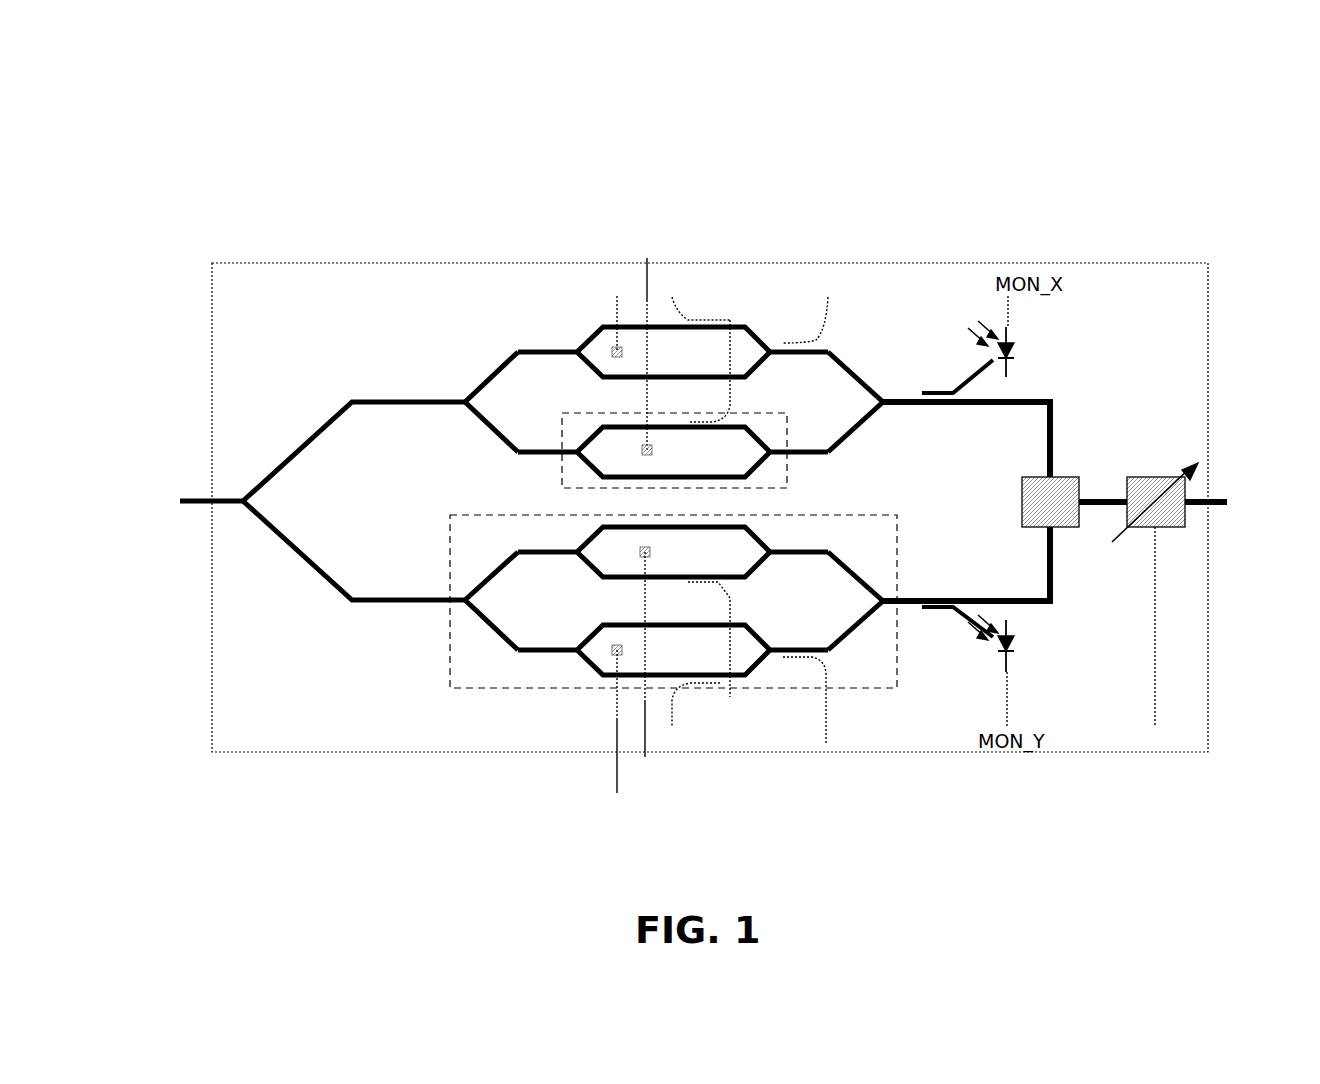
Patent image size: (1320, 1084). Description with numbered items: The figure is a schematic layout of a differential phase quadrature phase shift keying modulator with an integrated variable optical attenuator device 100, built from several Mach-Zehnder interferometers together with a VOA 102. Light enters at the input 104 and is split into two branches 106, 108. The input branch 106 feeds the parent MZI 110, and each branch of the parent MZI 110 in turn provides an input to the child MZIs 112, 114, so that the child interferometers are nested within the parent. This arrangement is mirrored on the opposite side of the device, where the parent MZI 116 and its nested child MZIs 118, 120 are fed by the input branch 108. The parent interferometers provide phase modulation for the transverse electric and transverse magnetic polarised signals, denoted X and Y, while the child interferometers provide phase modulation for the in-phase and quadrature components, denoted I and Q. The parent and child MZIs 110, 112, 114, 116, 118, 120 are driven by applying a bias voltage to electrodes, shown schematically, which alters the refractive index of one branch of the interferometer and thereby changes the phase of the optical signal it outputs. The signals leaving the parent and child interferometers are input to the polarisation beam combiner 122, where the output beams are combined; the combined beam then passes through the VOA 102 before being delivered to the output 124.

The differential phase quadrature phase shift keying modulator with integrated varia 100 is at (248, 185).
The VOA 102 is at (1160, 483).
The input 104 is at (183, 498).
The input branch 106 is at (293, 452).
The input branch 108 is at (283, 542).
The parent MZI 110 is at (490, 377).
The child MZI 112 is at (577, 447).
The child MZI 114 is at (598, 330).
The parent MZI 116 is at (478, 612).
The child MZI 118 is at (588, 565).
The child MZI 120 is at (600, 676).
The polarisation beam combiner 122 is at (1062, 527).
The output 124 is at (1190, 503).